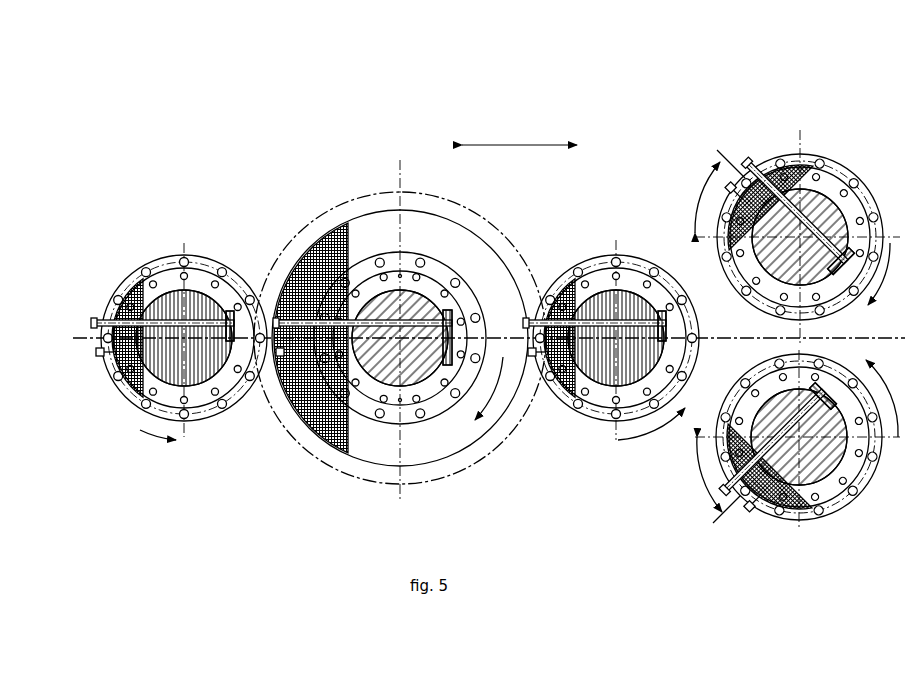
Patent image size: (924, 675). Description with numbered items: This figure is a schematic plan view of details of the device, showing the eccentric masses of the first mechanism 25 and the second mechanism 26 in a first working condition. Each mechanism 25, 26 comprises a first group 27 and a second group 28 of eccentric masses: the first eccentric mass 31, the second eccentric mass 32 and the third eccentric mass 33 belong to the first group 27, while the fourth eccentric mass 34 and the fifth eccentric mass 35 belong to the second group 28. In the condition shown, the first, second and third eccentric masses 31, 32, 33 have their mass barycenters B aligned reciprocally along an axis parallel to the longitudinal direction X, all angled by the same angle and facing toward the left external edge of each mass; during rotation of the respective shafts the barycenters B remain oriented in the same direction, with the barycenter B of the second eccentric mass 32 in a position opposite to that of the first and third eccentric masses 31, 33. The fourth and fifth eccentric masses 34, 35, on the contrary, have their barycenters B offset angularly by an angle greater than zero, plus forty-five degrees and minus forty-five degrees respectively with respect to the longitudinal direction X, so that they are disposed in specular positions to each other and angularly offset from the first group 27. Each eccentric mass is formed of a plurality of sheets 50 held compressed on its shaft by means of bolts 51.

The first mechanism 25 is at (561, 68).
The second mechanism 26 is at (560, 98).
The first group of eccentric masses 27 is at (400, 287).
The second group of eccentric masses 28 is at (800, 295).
The first eccentric mass 31 is at (175, 240).
The second eccentric mass 32 is at (342, 208).
The third eccentric mass 33 is at (583, 258).
The fourth eccentric mass 34 is at (760, 522).
The fifth eccentric mass 35 is at (858, 168).
The sheets 50 is at (127, 278).
The bolts 51 is at (207, 325).
The mass barycenter B is at (118, 385).
The longitudinal direction X is at (519, 133).